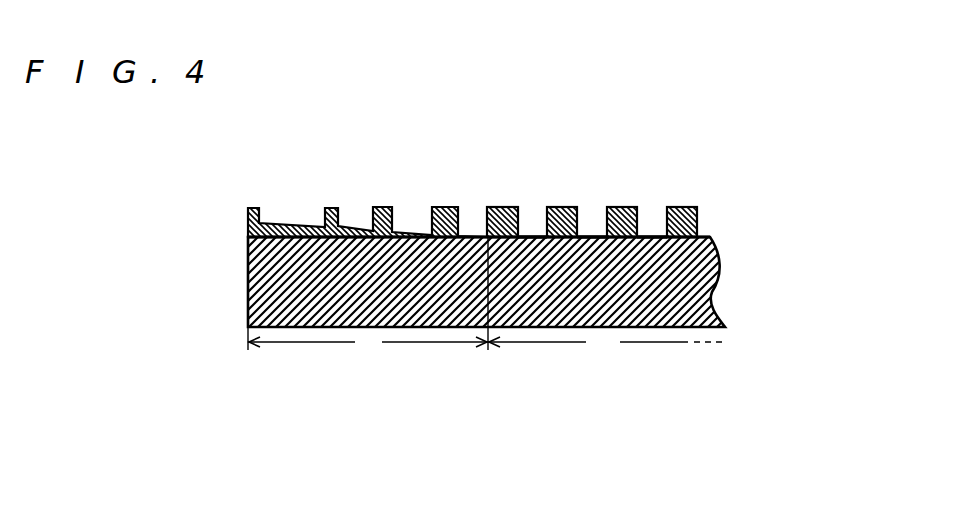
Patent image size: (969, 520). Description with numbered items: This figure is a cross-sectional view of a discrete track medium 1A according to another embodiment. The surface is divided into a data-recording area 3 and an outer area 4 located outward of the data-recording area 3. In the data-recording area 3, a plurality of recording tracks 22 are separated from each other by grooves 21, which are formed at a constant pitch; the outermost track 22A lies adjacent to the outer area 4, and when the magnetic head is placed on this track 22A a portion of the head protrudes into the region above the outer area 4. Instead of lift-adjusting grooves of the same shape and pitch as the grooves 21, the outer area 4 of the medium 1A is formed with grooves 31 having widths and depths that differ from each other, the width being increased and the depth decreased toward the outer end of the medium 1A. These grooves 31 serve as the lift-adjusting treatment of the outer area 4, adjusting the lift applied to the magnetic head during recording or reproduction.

The discrete track medium 1A is at (517, 372).
The data-recording area 3 is at (605, 345).
The outer area 4 is at (368, 297).
The grooves 21 is at (534, 229).
The recording tracks 22 is at (565, 206).
The track 22A is at (497, 206).
The grooves 31 is at (355, 219).